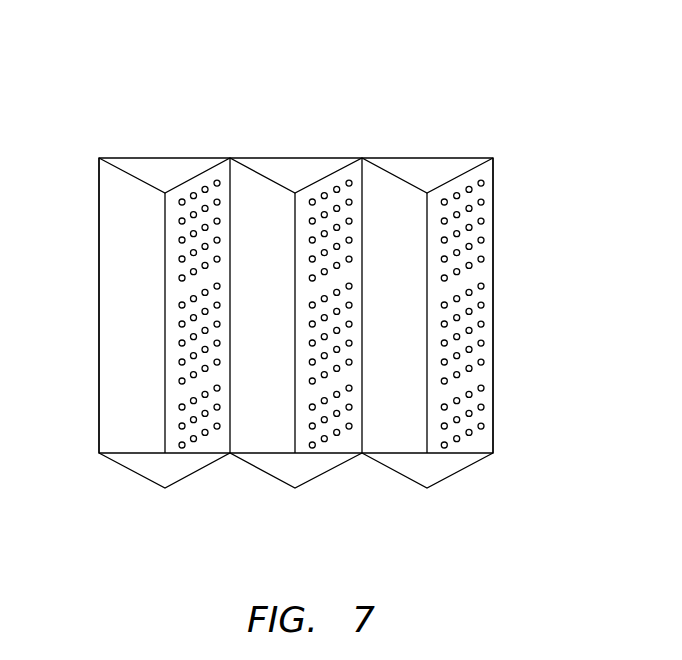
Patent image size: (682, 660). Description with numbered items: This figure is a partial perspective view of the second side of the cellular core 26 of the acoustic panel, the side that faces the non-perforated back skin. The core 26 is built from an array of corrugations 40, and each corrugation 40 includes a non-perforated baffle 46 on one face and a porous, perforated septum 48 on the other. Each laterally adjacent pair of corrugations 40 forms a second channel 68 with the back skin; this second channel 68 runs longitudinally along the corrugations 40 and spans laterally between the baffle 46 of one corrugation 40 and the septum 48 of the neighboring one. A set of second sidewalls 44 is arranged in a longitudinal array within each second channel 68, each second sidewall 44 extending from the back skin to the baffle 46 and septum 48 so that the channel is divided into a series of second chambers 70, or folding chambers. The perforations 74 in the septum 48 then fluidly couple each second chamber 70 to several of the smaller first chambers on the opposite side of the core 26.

The cellular core 26 is at (509, 93).
The corrugation 40 is at (164, 139).
The second sidewall 44 is at (473, 158).
The non-perforated baffle 46 is at (100, 337).
The perforated septum 48 is at (193, 183).
The second channel 68 is at (294, 489).
The second chamber 70 is at (139, 438).
The perforations 74 is at (484, 202).